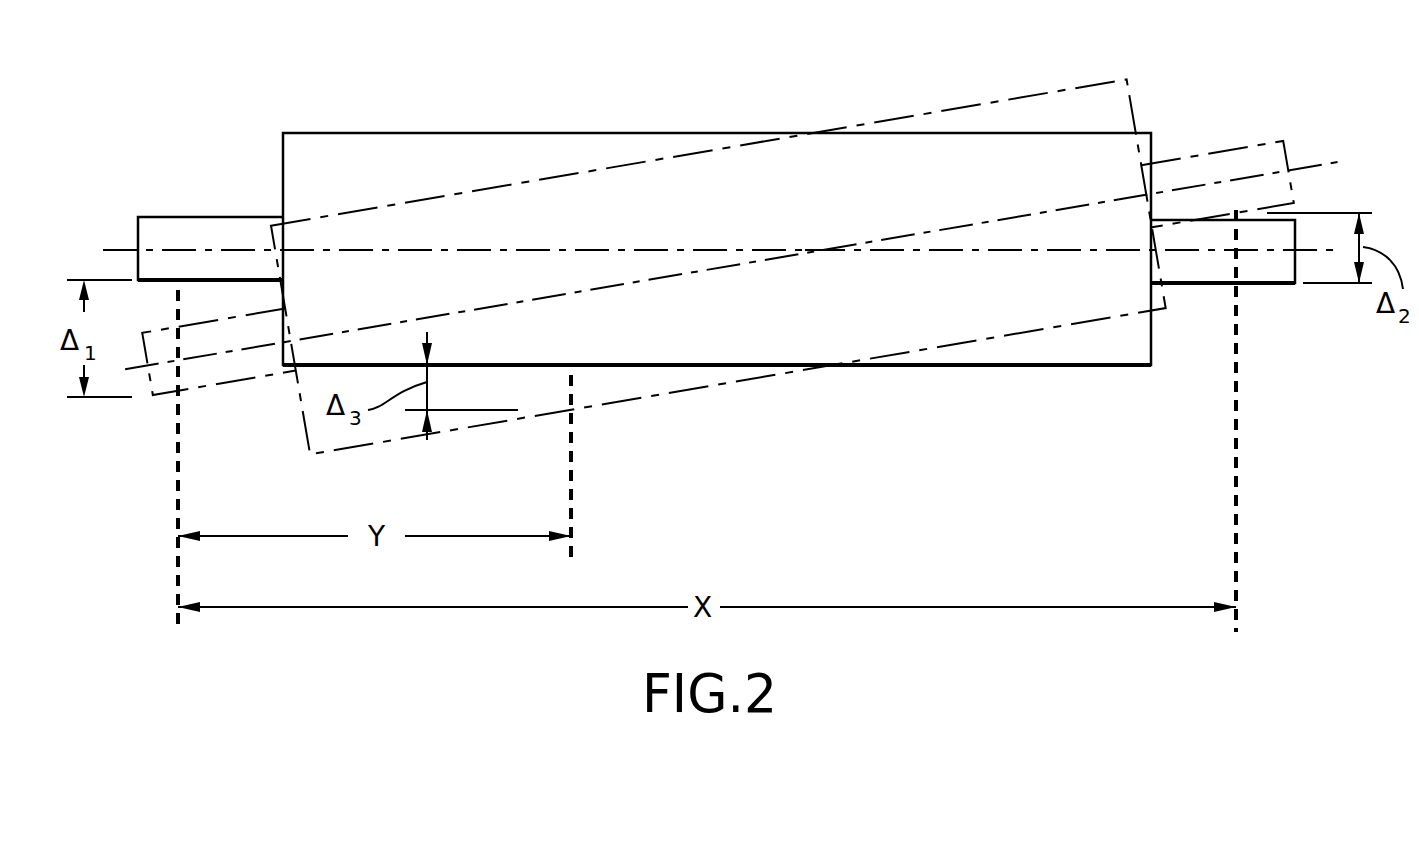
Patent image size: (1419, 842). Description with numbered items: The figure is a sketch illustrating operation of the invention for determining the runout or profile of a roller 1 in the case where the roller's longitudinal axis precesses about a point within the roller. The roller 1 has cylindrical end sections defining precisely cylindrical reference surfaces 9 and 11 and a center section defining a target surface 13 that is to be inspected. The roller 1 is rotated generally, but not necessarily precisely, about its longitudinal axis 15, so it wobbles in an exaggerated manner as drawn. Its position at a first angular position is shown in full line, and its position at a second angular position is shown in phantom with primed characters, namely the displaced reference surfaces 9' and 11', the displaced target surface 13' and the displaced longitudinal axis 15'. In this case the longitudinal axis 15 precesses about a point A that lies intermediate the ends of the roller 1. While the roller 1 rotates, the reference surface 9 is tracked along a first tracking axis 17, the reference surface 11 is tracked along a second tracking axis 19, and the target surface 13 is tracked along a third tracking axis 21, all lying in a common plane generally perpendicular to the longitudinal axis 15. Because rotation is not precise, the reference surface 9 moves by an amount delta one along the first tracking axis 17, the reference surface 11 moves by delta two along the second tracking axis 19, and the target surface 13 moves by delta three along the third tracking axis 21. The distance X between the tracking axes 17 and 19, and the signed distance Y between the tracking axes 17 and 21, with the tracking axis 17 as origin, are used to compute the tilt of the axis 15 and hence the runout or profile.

The roller 1 is at (724, 216).
The first cylindrical reference surface 9 is at (210, 221).
The first reference surface in second angular position 9' is at (219, 369).
The second cylindrical reference surface 11 is at (1230, 284).
The second reference surface in second angular position 11' is at (1240, 155).
The target surface 13 is at (717, 218).
The target surface in second angular position 13' is at (718, 241).
The longitudinal axis 15 is at (728, 244).
The longitudinal axis in second angular position 15' is at (731, 233).
The first tracking axis 17 is at (176, 437).
The second tracking axis 19 is at (1238, 450).
The third tracking axis 21 is at (571, 462).
The point A is at (815, 250).